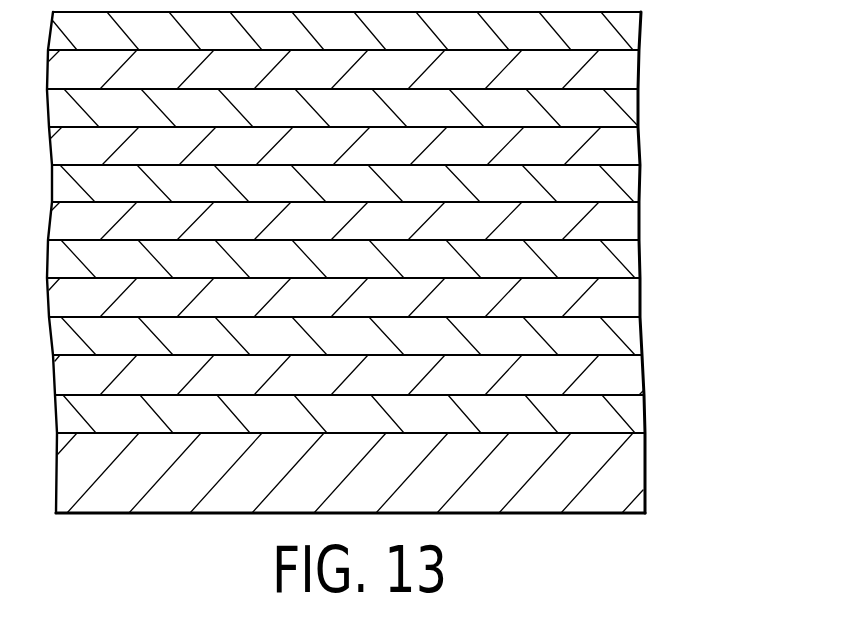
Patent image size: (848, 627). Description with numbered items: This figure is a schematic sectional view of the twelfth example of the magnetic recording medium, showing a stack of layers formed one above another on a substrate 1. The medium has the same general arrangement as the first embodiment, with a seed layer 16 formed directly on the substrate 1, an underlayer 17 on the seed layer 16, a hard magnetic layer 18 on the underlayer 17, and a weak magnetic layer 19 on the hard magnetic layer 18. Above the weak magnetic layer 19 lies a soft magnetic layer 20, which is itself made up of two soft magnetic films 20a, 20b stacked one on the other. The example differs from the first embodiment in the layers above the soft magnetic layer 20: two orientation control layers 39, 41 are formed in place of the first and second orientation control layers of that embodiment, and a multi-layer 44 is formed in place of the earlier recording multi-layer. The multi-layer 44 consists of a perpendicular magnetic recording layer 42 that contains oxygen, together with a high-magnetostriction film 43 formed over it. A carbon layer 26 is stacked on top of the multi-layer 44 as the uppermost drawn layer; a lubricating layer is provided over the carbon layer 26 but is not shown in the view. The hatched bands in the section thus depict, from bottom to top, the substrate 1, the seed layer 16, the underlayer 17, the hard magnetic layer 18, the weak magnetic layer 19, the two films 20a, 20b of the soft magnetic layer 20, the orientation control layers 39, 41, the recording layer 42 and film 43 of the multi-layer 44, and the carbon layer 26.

The substrate 1 is at (622, 477).
The seed layer 16 is at (624, 415).
The underlayer 17 is at (622, 377).
The hard magnetic layer 18 is at (624, 339).
The weak magnetic layer 19 is at (622, 300).
The soft magnetic layer 20 is at (728, 200).
The soft magnetic film 20a is at (624, 262).
The soft magnetic film 20b is at (622, 224).
The carbon layer 26 is at (624, 31).
The orientation control layer 39 is at (624, 185).
The orientation control layer 41 is at (622, 147).
The perpendicular magnetic recording layer 42 is at (624, 109).
The high-magnetostriction film 43 is at (622, 70).
The multi-layer 44 is at (720, 47).